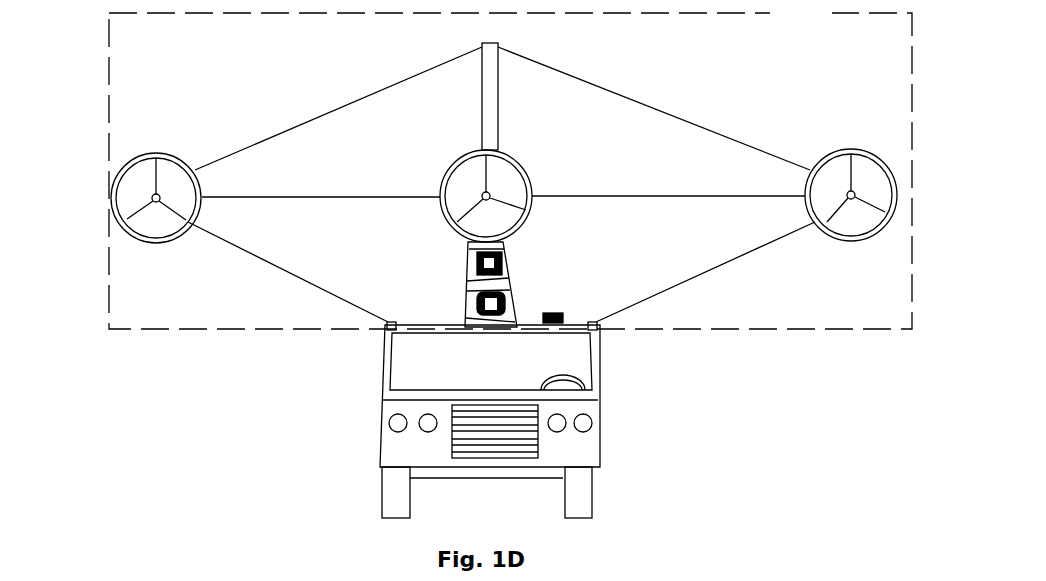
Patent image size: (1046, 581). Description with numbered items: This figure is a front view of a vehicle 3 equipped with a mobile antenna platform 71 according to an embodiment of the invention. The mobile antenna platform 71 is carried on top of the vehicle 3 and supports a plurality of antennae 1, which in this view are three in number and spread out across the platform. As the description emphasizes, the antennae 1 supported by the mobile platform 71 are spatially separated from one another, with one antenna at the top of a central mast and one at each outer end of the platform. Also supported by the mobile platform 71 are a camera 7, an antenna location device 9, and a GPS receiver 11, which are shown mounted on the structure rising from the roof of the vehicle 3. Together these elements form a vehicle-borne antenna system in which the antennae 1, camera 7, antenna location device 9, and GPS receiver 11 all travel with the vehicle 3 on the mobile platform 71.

The mobile antenna platform 71 is at (510, 167).
The antennae 1 is at (504, 179).
The camera 7 is at (505, 255).
The antenna location device 9 is at (510, 295).
The GPS receiver 11 is at (567, 318).
The vehicle 3 is at (573, 407).